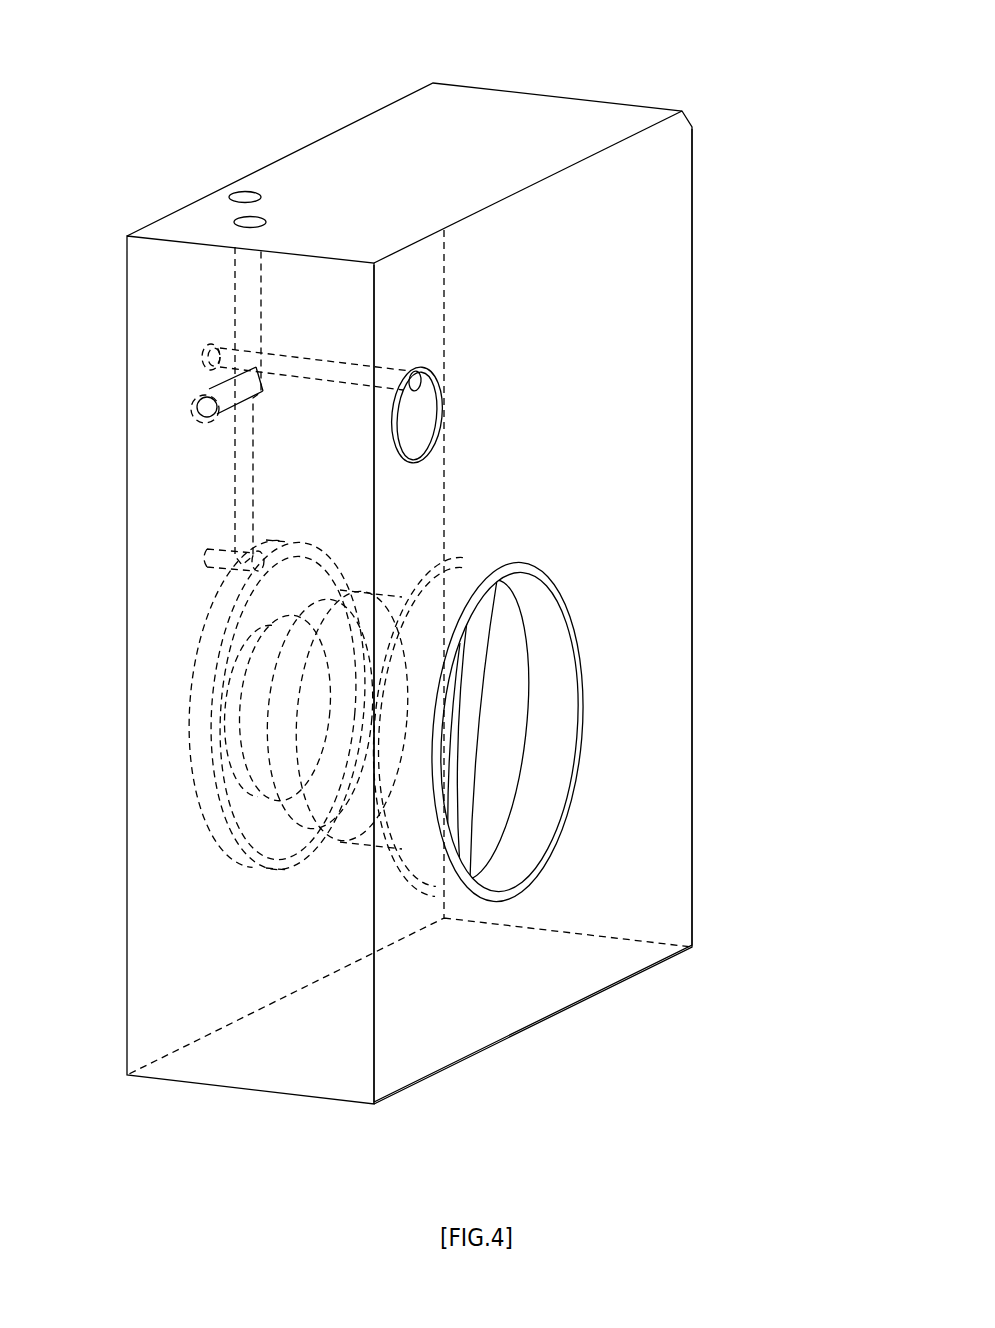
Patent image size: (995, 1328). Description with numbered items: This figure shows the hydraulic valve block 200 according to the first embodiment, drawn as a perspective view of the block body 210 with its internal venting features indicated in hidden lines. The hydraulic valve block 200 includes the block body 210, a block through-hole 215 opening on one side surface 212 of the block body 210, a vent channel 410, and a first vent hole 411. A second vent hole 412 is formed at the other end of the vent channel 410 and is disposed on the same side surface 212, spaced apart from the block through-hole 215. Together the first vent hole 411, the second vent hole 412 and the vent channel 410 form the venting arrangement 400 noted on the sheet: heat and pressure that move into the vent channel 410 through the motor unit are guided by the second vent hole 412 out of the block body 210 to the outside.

The hydraulic valve block 200 is at (113, 28).
The block body 210 is at (308, 138).
The one side surface 212 is at (603, 458).
The block through-hole 215 is at (495, 722).
The fixing member 400 is at (783, 1184).
The vent channel 410 is at (252, 362).
The first vent hole 411 is at (202, 565).
The second vent hole 412 is at (430, 373).